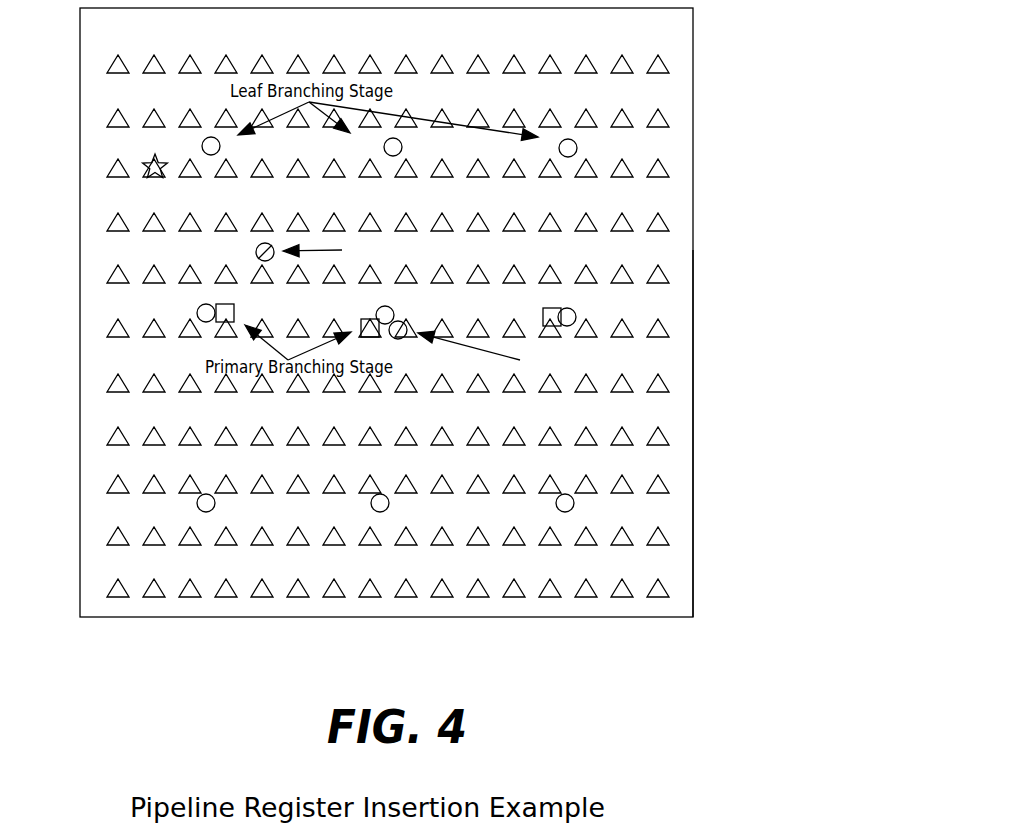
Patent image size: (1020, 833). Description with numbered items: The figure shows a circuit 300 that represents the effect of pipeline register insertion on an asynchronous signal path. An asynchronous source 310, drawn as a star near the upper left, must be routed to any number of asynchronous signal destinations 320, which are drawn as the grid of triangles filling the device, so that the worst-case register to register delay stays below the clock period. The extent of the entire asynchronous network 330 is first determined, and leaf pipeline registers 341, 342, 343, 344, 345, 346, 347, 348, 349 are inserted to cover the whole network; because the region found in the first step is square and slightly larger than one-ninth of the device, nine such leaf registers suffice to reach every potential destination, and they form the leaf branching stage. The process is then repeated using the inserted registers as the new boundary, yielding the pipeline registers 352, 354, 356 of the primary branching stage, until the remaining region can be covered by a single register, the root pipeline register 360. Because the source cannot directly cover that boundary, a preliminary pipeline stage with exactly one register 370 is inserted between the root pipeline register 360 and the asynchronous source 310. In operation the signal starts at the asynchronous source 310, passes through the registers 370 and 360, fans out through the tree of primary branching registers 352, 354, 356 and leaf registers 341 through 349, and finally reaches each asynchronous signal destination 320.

The circuit 300 is at (124, 641).
The asynchronous source 310 is at (147, 160).
The asynchronous signal destinations 320 is at (665, 172).
The asynchronous network 330 is at (693, 378).
The leaf pipeline register 341 is at (220, 146).
The leaf pipeline register 342 is at (402, 147).
The leaf pipeline register 343 is at (577, 148).
The leaf pipeline register 344 is at (197, 313).
The leaf pipeline register 345 is at (391, 307).
The leaf pipeline register 346 is at (577, 315).
The leaf pipeline register 347 is at (213, 508).
The leaf pipeline register 348 is at (387, 508).
The leaf pipeline register 349 is at (572, 508).
The primary branching stage pipeline register 352 is at (234, 311).
The primary branching stage pipeline register 354 is at (378, 337).
The primary branching stage pipeline register 356 is at (543, 313).
The root pipeline register 360 is at (406, 327).
The preliminary pipeline stage register 370 is at (256, 252).